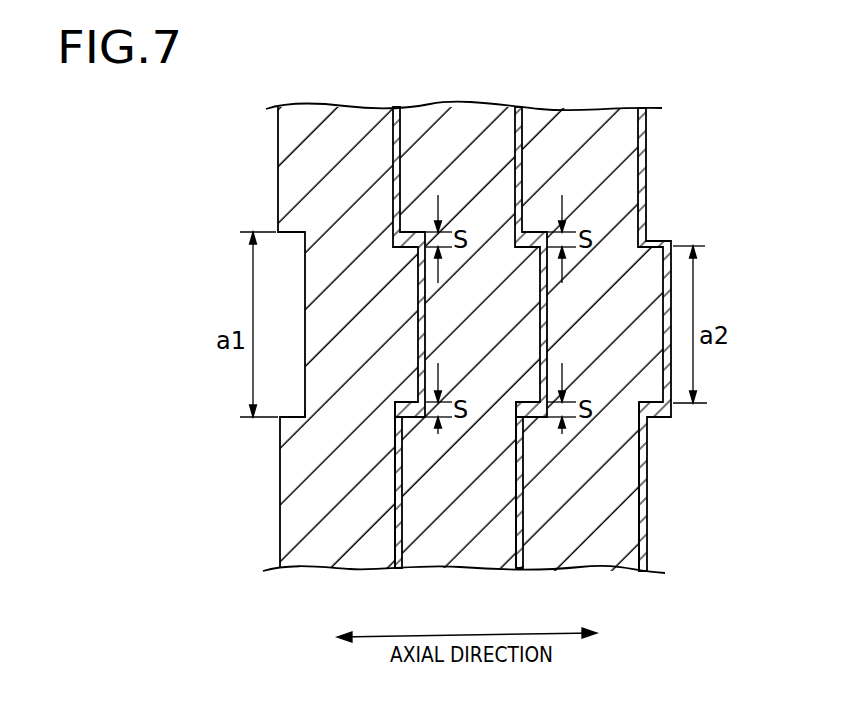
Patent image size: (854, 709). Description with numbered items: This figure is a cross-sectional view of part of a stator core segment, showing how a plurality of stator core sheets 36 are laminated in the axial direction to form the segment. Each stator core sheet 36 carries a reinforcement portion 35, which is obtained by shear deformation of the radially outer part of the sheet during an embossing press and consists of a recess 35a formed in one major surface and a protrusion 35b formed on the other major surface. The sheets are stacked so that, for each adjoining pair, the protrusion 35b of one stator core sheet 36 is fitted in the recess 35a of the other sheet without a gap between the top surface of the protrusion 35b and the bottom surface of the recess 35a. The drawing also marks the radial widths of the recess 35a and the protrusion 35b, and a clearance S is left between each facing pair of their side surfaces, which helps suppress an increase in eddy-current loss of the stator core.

The reinforcement portion 35 is at (432, 323).
The recess 35a is at (295, 414).
The protrusion 35b is at (415, 412).
The stator core sheet 36 is at (340, 132).